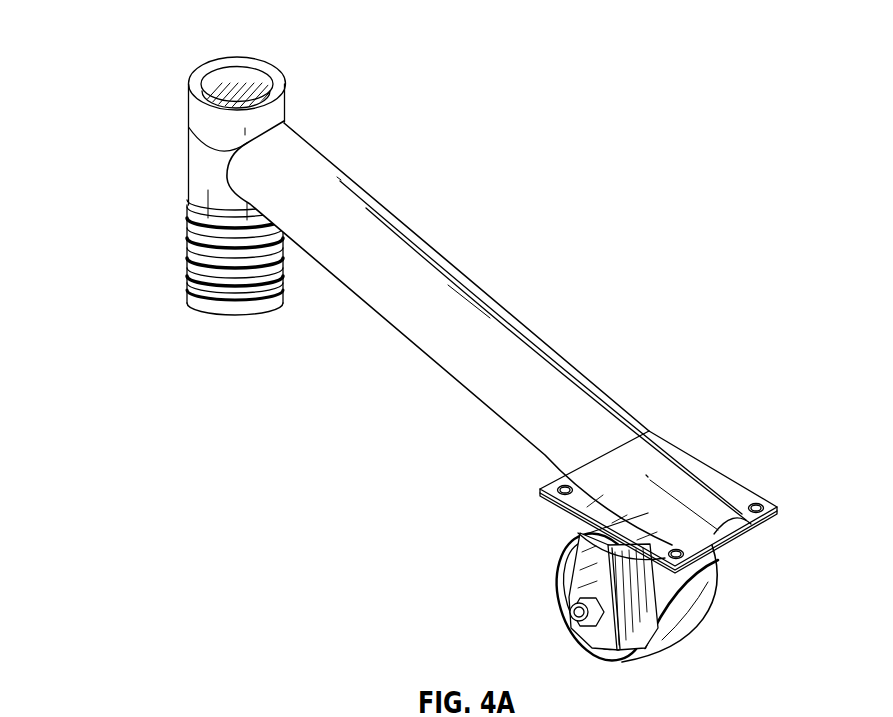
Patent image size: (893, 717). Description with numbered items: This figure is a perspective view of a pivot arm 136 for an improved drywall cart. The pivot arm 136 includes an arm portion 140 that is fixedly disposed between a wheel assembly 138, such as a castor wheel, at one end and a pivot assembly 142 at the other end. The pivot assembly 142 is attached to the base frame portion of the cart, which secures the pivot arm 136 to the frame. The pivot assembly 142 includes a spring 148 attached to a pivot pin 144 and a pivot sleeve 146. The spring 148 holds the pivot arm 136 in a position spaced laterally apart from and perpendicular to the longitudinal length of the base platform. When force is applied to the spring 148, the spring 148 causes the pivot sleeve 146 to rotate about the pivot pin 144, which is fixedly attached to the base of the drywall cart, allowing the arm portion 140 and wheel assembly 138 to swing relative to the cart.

The pivot arm 136 is at (120, 77).
The wheel assembly 138 is at (541, 612).
The arm portion 140 is at (480, 327).
The pivot assembly 142 is at (294, 48).
The pivot pin 144 is at (232, 78).
The pivot sleeve 146 is at (188, 155).
The spring 148 is at (187, 255).